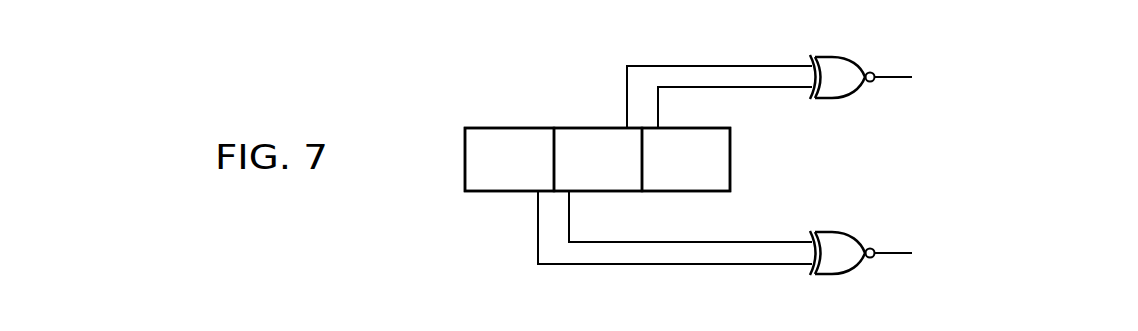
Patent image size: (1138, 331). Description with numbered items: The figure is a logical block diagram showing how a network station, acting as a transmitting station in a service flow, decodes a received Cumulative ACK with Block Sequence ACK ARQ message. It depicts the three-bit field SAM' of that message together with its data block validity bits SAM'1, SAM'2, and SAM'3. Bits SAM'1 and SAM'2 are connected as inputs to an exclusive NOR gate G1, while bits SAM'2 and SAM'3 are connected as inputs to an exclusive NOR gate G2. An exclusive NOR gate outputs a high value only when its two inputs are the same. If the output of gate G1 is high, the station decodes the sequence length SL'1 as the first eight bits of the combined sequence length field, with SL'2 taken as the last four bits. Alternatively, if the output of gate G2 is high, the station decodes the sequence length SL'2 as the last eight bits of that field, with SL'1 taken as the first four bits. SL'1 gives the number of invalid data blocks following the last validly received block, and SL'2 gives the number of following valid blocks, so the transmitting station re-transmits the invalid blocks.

The 3-bit SAM' is at (552, 158).
The data block validity bit SAM'1 is at (509, 159).
The data block validity bit SAM'2 is at (598, 159).
The data block validity bit SAM'3 is at (686, 159).
The exclusive NOR gate G1 is at (845, 232).
The exclusive NOR gate G2 is at (845, 98).
The sequence length SL'1 is at (970, 258).
The sequence length SL'2 is at (970, 79).